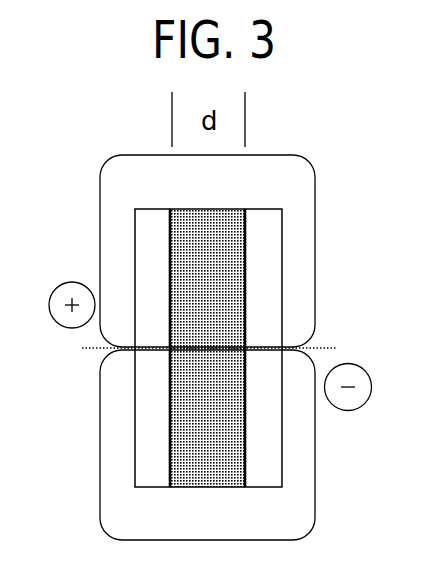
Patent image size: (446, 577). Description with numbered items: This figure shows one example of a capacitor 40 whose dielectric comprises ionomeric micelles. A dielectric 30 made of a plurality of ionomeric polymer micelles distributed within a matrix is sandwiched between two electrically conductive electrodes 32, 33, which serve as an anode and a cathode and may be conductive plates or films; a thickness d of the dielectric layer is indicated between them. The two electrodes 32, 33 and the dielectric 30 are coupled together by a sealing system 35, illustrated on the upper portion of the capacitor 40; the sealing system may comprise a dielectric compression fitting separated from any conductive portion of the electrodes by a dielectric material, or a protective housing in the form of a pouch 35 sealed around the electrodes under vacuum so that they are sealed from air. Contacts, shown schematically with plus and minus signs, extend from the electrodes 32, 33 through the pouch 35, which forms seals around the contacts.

The dielectric 30 is at (187, 473).
The electrode 32 is at (263, 455).
The electrode 33 is at (157, 452).
The sealing system 35 is at (315, 198).
The capacitor 40 is at (239, 349).